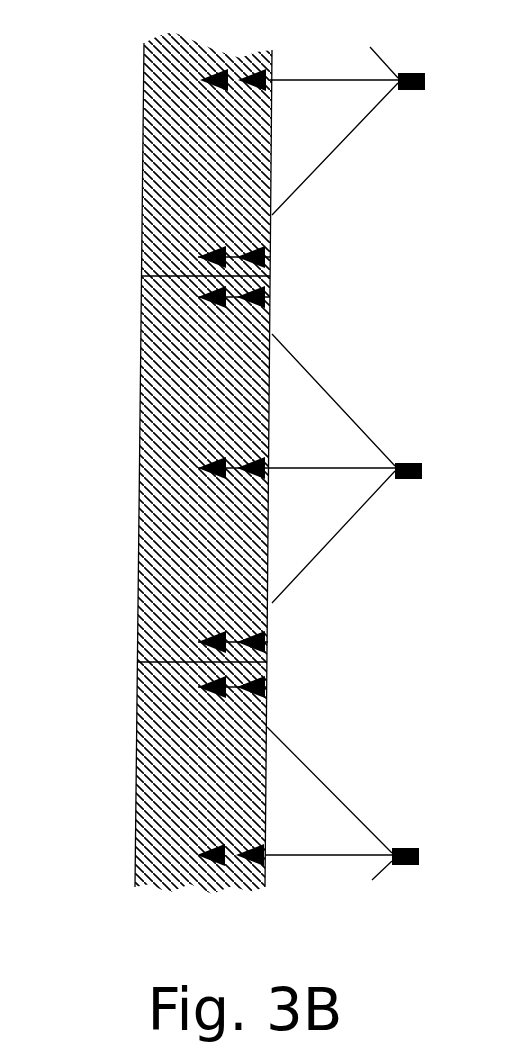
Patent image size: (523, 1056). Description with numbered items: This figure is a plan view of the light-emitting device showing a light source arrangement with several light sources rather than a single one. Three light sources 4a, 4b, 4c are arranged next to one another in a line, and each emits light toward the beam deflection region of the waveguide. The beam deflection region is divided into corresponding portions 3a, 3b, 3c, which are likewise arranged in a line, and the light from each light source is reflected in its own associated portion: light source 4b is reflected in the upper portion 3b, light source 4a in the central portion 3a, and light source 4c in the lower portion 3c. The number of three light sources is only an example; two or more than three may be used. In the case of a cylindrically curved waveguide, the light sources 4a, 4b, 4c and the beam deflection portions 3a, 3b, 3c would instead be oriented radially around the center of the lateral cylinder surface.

The beam deflection portion 3a is at (128, 450).
The beam deflection portion 3b is at (125, 100).
The beam deflection portion 3c is at (118, 840).
The light source 4a is at (438, 440).
The light source 4b is at (418, 117).
The light source 4c is at (420, 822).